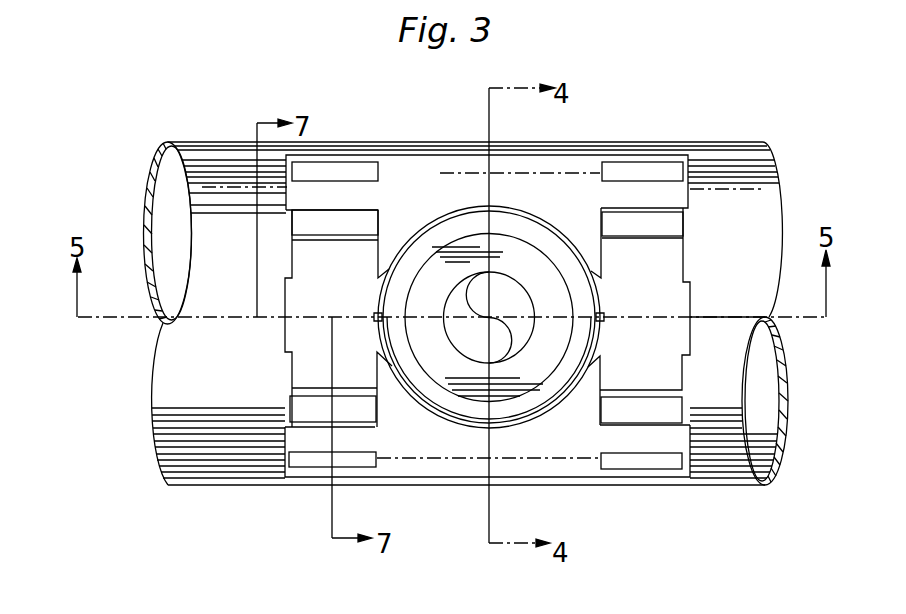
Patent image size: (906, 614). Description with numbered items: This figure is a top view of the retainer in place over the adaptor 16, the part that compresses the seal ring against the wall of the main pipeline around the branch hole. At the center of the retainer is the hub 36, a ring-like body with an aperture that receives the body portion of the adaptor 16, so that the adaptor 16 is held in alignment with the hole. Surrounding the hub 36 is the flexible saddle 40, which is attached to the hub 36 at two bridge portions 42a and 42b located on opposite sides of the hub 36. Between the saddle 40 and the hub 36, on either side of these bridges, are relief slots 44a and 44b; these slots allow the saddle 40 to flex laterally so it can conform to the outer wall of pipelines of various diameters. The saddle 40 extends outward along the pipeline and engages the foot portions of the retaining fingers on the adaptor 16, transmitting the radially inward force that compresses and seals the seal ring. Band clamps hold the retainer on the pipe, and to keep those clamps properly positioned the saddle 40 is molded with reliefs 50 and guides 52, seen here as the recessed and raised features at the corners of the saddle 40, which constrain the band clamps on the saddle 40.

The adaptor 16 is at (532, 260).
The hub 36 is at (525, 410).
The flexible saddle 40 is at (580, 440).
The bridge portion 42a is at (601, 317).
The bridge portion 42b is at (378, 325).
The relief slot 44a is at (428, 221).
The relief slot 44b is at (477, 432).
The relief 50 is at (310, 262).
The guide 52 is at (302, 189).